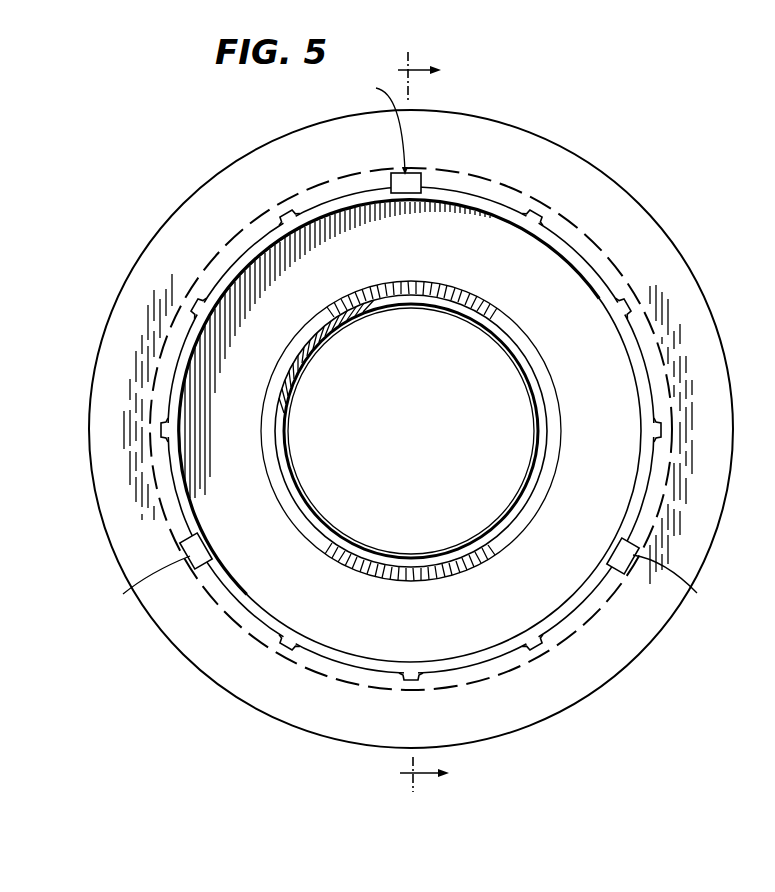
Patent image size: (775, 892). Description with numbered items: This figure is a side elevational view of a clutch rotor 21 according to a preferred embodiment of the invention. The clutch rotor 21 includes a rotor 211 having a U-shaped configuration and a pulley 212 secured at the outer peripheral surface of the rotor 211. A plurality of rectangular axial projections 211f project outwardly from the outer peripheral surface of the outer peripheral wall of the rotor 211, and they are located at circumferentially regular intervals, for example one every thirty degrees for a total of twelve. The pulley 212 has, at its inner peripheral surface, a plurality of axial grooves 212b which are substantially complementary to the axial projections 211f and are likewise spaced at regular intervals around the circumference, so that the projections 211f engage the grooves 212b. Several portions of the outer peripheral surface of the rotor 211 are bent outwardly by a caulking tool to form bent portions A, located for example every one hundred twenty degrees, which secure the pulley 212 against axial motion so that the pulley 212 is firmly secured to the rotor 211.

The clutch rotor 21 is at (533, 99).
The pulley 212 is at (572, 152).
The axial projection 211f is at (637, 297).
The axial groove 212b is at (630, 311).
The rotor 211 is at (634, 342).